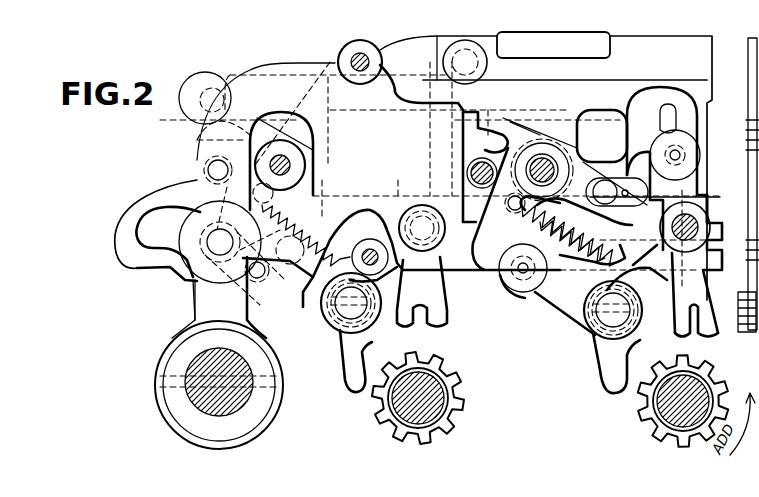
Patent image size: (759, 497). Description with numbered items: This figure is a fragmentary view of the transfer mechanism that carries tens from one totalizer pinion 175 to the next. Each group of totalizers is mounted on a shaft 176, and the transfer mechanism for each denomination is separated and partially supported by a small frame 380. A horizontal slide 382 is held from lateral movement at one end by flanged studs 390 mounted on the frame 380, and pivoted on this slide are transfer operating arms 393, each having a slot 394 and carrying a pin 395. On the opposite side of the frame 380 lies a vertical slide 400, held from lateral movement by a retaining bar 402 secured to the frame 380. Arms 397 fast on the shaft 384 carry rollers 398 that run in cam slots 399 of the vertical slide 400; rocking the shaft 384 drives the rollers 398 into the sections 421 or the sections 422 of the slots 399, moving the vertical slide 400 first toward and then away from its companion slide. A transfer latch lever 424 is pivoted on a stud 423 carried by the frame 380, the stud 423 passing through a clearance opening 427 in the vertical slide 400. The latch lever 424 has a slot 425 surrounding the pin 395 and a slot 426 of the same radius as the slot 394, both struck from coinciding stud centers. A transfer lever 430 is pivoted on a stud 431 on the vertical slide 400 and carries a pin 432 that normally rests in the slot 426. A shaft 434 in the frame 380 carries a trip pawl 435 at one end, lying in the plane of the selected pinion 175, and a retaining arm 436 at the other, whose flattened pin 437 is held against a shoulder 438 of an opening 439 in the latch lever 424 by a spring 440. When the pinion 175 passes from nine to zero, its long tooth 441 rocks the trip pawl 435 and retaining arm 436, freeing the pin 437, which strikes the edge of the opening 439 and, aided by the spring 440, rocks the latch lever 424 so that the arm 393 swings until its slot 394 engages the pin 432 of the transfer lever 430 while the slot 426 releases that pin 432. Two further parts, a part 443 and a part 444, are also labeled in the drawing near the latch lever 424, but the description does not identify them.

The totalizer pinion 175 is at (464, 399).
The shaft 176 is at (445, 409).
The frame 380 is at (710, 73).
The horizontal slide 382 is at (598, 87).
The shaft 384 is at (200, 359).
The flanged stud 390 is at (485, 62).
The transfer operating arm 393 is at (667, 281).
The slot 394 is at (712, 255).
The pin 395 is at (603, 182).
The arm 397 is at (197, 311).
The roller 398 is at (200, 213).
The cam slot 399 is at (188, 279).
The vertical slide 400 is at (188, 187).
The retaining bar 402 is at (348, 57).
The section of slot 421 is at (146, 238).
The section of slot 422 is at (328, 323).
The stud 423 is at (282, 157).
The transfer latch lever 424 is at (592, 167).
The slot 425 is at (627, 190).
The slot 426 is at (676, 124).
The clearance opening 427 is at (266, 125).
The transfer lever 430 is at (442, 328).
The stud 431 is at (698, 224).
The pin 432 is at (680, 155).
The shaft 434 is at (370, 330).
The trip pawl 435 is at (345, 381).
The retaining arm 436 is at (570, 313).
The flattened pin 437 is at (536, 292).
The shoulder 438 is at (510, 298).
The opening 439 is at (492, 268).
The spring 440 is at (592, 244).
The long tooth 441 is at (376, 403).
The pin 443 is at (482, 167).
The hook 444 is at (484, 128).